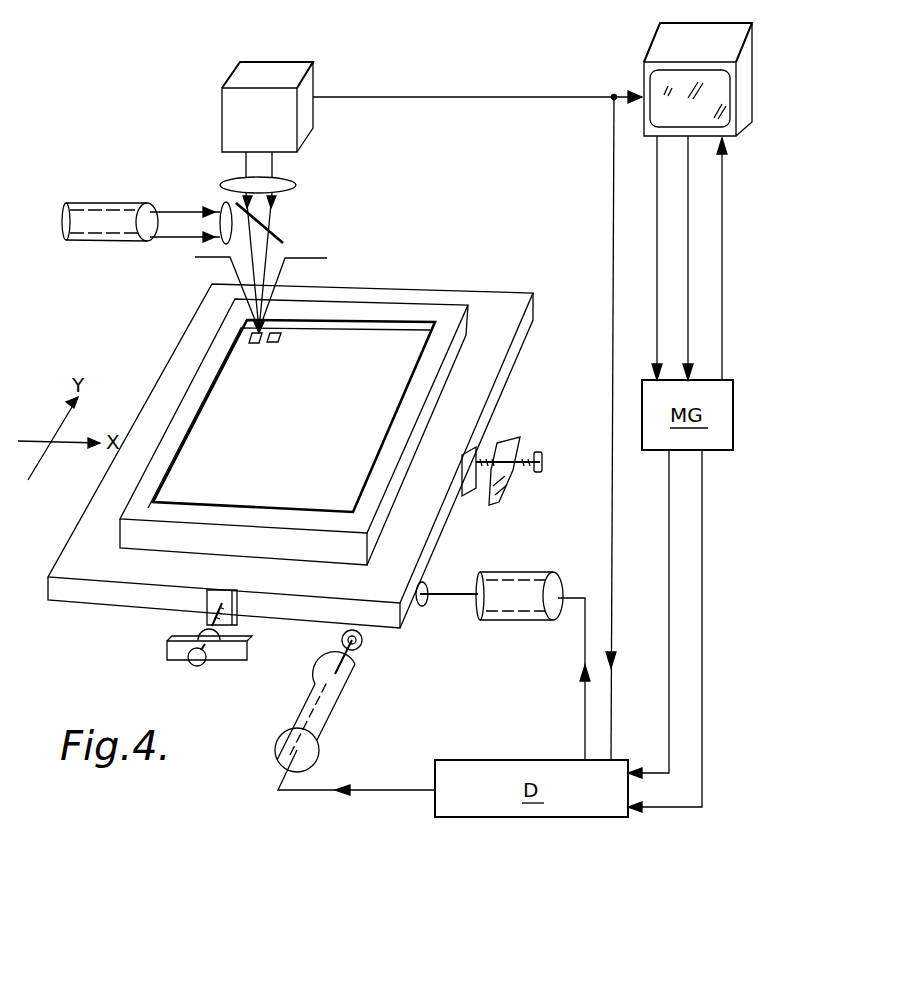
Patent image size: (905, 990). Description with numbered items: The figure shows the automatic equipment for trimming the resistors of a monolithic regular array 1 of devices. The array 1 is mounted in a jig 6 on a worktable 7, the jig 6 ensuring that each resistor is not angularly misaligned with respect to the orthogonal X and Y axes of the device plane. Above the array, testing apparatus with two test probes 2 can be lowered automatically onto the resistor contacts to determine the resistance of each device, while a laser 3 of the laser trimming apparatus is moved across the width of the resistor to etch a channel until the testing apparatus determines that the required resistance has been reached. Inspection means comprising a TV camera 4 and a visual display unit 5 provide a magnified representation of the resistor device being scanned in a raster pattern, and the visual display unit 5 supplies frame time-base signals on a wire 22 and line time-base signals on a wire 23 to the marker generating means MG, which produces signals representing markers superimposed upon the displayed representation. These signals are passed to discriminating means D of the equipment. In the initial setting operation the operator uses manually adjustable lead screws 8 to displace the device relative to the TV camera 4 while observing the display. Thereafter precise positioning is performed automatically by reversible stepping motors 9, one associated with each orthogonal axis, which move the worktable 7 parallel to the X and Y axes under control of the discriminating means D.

The monolithic regular array 1 is at (312, 426).
The test probes 2 is at (308, 258).
The laser 3 is at (96, 204).
The TV camera 4 is at (305, 120).
The visual display unit 5 is at (658, 82).
The jig 6 is at (452, 312).
The worktable 7 is at (493, 378).
The lead screws 8 is at (520, 480).
The reversible stepping motors 9 is at (513, 610).
The wire 22 is at (655, 297).
The wire 23 is at (690, 297).